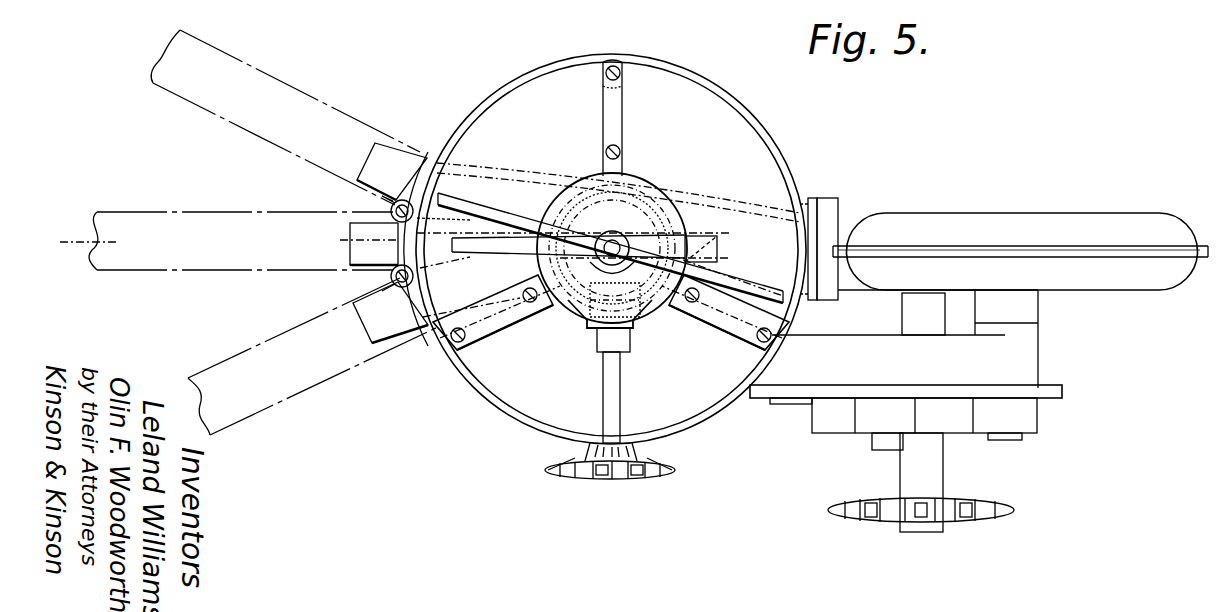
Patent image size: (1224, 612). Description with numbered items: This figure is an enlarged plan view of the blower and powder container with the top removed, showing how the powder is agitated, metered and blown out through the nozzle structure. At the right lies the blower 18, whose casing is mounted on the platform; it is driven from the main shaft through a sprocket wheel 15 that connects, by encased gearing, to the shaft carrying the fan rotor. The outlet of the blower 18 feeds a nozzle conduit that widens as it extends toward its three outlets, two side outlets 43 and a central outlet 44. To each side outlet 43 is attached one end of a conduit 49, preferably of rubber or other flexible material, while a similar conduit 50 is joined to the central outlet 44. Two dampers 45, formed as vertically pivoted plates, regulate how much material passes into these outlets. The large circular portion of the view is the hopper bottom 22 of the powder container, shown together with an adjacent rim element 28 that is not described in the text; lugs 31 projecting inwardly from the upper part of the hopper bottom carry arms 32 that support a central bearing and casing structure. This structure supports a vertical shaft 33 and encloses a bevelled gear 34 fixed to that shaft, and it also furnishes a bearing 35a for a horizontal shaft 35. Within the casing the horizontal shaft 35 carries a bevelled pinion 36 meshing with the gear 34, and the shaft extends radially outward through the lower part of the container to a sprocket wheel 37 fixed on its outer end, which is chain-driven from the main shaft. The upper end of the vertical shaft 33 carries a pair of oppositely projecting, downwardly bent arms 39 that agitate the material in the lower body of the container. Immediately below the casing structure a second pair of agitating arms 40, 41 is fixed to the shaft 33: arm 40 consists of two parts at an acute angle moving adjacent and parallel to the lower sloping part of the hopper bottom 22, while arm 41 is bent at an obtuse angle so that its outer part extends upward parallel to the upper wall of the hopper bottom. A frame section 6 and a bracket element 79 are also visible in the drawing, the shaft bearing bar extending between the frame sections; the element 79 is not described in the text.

The frame section 6 is at (632, 248).
The sprocket wheel 15 is at (1003, 503).
The blower 18 is at (933, 213).
The hopper bottom 22 is at (717, 415).
The rim 28 is at (694, 420).
The lug 31 is at (624, 76).
The arm 32 is at (616, 122).
The vertical shaft 33 is at (618, 240).
The bevelled gear 34 is at (660, 224).
The horizontal shaft 35 is at (617, 369).
The bearing 35a is at (624, 340).
The bevelled pinion 36 is at (583, 304).
The sprocket wheel 37 is at (677, 470).
The agitator arm 39 is at (745, 290).
The agitating arm 40 is at (718, 248).
The agitating arm 41 is at (458, 252).
The side outlet 43 is at (373, 158).
The central outlet 44 is at (350, 240).
The damper 45 is at (440, 219).
The conduit 49 is at (230, 360).
The conduit 50 is at (237, 271).
The bracket 79 is at (1013, 360).